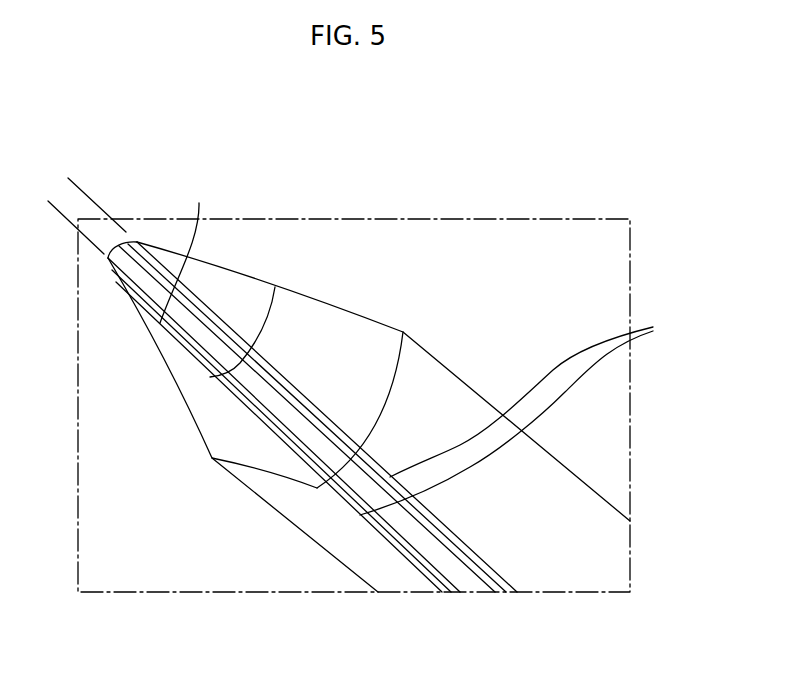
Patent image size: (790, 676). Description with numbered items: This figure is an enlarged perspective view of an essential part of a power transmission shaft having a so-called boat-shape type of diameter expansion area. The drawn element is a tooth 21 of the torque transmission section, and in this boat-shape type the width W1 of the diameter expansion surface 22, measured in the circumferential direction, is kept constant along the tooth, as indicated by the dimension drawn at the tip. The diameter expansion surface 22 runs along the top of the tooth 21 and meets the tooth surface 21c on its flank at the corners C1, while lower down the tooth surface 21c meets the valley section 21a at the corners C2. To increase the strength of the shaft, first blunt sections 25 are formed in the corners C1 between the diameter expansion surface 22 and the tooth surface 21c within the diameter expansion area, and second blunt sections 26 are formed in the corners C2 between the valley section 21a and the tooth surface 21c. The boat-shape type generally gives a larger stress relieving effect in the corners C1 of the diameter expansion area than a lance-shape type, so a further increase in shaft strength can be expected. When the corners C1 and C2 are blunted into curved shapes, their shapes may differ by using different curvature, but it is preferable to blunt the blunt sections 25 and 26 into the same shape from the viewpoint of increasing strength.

The tooth 21 is at (530, 340).
The valley section 21a is at (395, 525).
The tooth surface 21c is at (432, 410).
The diameter expansion surface 22 is at (266, 404).
The first blunt section 25 is at (200, 288).
The second blunt section 26 is at (401, 417).
The corner C1 is at (312, 463).
The corner C2 is at (454, 578).
The width W1 is at (40, 223).